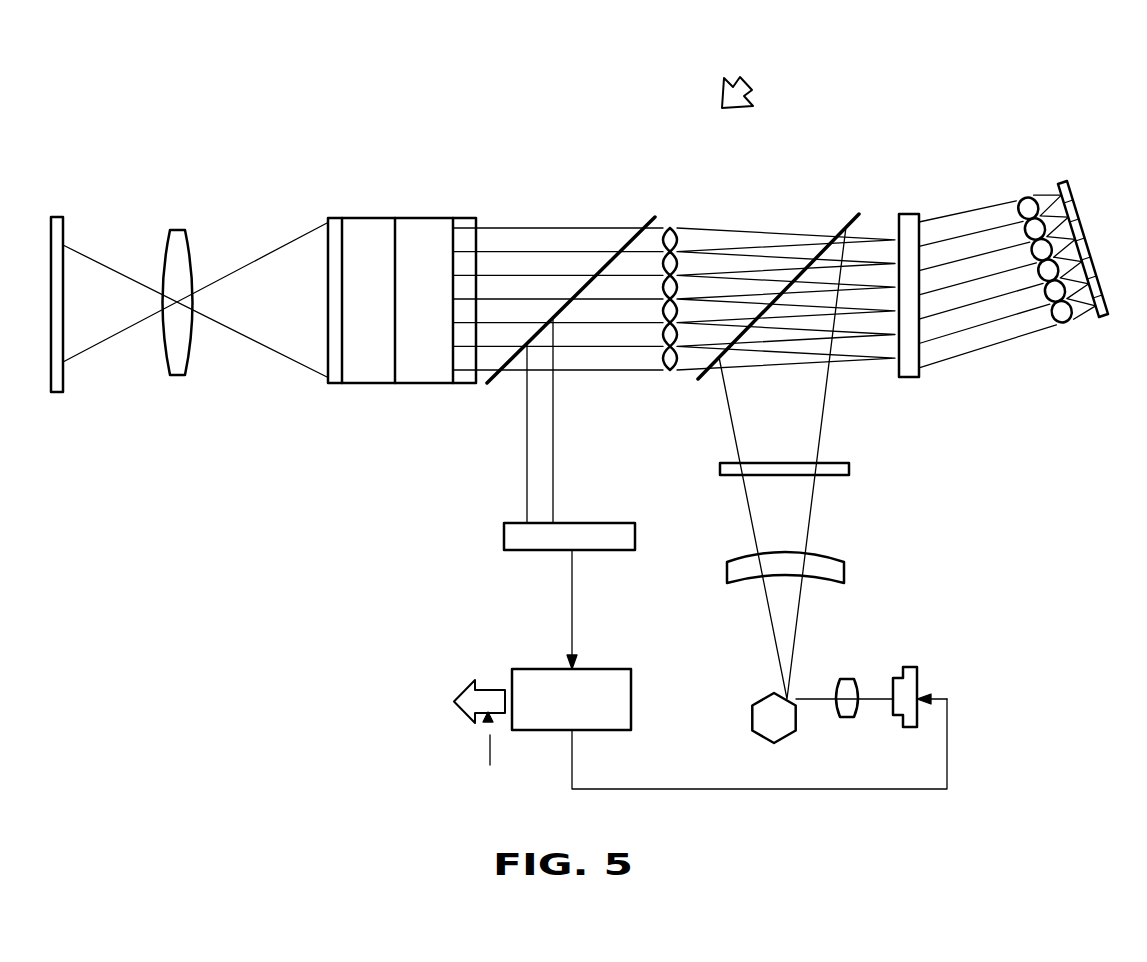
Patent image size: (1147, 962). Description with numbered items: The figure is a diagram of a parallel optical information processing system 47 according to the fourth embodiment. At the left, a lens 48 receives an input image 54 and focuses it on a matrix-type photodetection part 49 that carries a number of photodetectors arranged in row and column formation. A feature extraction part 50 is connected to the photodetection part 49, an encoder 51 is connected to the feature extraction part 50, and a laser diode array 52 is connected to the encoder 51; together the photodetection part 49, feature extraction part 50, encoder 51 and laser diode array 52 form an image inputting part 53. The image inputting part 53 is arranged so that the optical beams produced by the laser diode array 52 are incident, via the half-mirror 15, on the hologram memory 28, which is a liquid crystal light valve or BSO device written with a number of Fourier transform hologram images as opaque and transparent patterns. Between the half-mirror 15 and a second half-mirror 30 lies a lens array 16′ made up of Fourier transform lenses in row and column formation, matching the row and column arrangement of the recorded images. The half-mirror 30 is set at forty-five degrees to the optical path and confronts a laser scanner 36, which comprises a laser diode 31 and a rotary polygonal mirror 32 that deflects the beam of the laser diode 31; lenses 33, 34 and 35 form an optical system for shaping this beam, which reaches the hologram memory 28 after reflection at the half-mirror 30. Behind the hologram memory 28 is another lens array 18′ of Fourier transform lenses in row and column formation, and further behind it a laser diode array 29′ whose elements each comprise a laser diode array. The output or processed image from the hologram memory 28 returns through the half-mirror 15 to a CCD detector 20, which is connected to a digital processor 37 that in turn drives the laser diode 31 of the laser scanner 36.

The input image 54 is at (65, 225).
The lens 48 is at (180, 232).
The image inputting part 53 is at (417, 130).
The photodetection part 49 is at (335, 218).
The feature extraction part 50 is at (377, 225).
The encoder 51 is at (430, 225).
The laser diode array 52 is at (468, 220).
The half-mirror 15 is at (655, 217).
The lens array 16′ is at (680, 225).
The half-mirror 30 is at (858, 215).
The hologram memory 28 is at (910, 214).
The lens array 18′ is at (1025, 200).
The laser diode array 29′ is at (1063, 183).
The parallel optical information processing system 47 is at (758, 76).
The lens 35 is at (720, 468).
The lens 34 is at (726, 573).
The laser scanner 36 is at (883, 577).
The rotary polygonal mirror 32 is at (753, 720).
The lens 33 is at (848, 683).
The laser diode 31 is at (912, 667).
The CCD detector 20 is at (504, 537).
The digital processor 37 is at (530, 732).